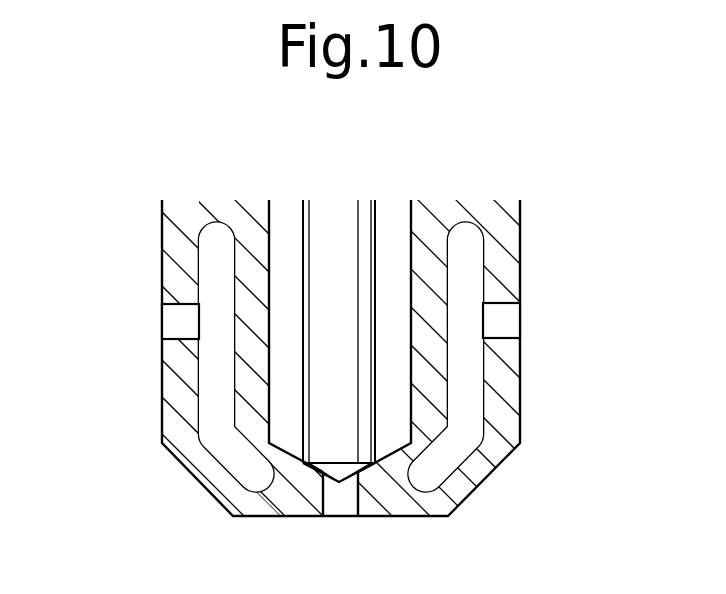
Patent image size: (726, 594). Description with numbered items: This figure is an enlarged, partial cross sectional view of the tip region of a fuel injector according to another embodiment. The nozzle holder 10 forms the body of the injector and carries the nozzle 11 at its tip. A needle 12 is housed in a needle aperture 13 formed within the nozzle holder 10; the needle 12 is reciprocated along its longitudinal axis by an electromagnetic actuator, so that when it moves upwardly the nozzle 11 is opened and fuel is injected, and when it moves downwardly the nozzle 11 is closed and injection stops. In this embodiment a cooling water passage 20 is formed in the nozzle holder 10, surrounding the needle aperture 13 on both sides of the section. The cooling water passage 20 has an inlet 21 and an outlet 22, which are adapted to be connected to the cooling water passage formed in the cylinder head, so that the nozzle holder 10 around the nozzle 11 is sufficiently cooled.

The nozzle holder 10 is at (173, 235).
The nozzle 11 is at (342, 497).
The needle 12 is at (343, 210).
The needle aperture 13 is at (406, 232).
The cooling water passage 20 is at (465, 259).
The inlet 21 is at (495, 318).
The outlet 22 is at (177, 328).